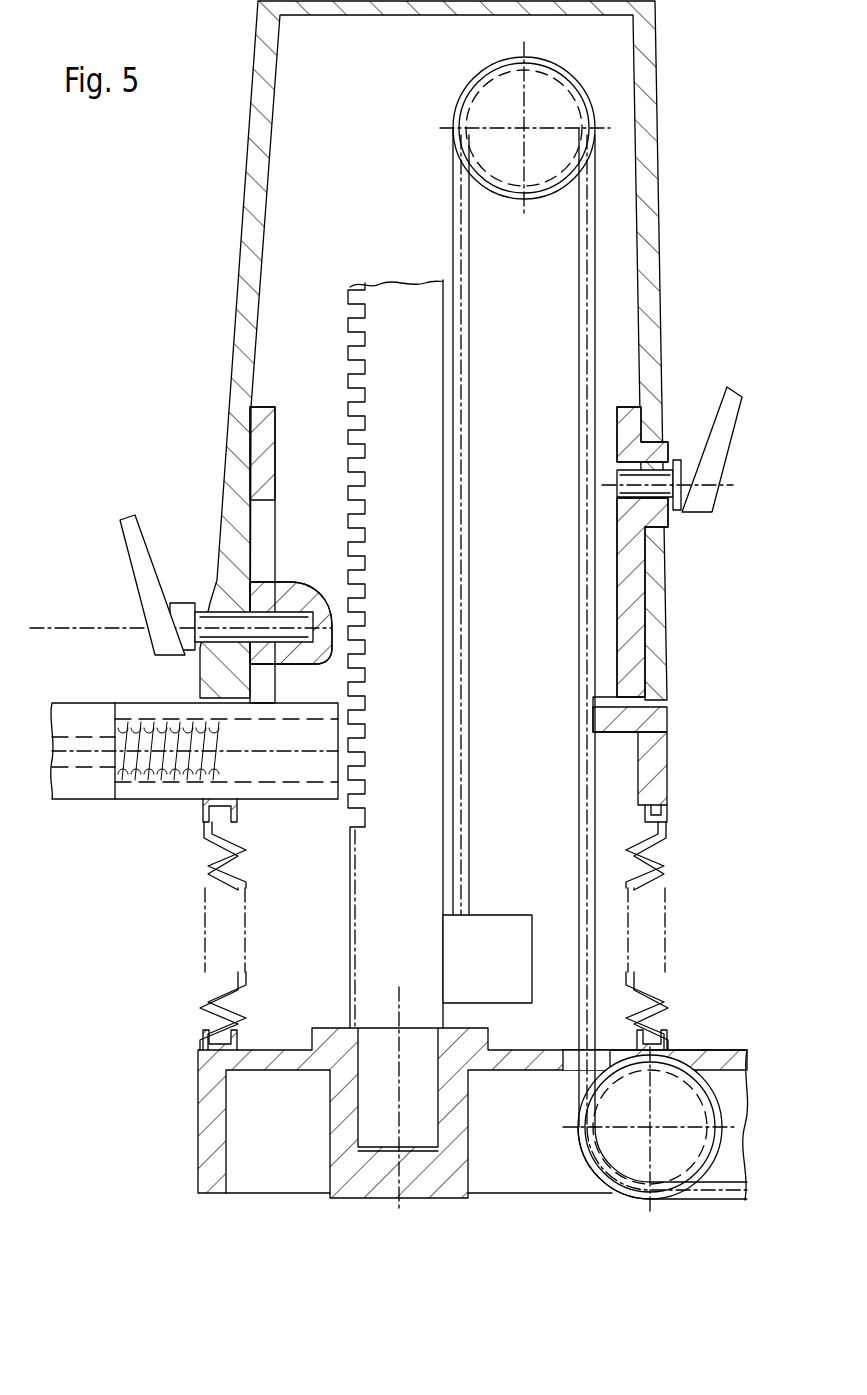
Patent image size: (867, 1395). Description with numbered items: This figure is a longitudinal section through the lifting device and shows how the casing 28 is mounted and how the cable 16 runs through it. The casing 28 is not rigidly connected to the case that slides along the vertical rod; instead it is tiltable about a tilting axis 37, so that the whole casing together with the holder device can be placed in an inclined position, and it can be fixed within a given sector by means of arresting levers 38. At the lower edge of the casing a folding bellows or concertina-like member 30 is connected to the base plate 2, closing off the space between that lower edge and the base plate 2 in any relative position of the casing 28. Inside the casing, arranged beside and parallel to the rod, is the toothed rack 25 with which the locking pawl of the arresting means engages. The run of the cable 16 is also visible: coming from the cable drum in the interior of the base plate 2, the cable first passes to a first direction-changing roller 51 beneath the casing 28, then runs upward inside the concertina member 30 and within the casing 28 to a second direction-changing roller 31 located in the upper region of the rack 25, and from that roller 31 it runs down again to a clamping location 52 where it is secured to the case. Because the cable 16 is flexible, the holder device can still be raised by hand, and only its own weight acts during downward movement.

The base plate 2 is at (716, 1060).
The cable 16 is at (593, 620).
The rack 25 is at (370, 332).
The casing 28 is at (252, 283).
The folding bellows 30 is at (663, 830).
The second direction-changing roller 31 is at (498, 108).
The tilting axis 37 is at (92, 627).
The arresting levers 38 is at (130, 527).
The first direction-changing roller 51 is at (616, 1148).
The clamping location 52 is at (505, 930).